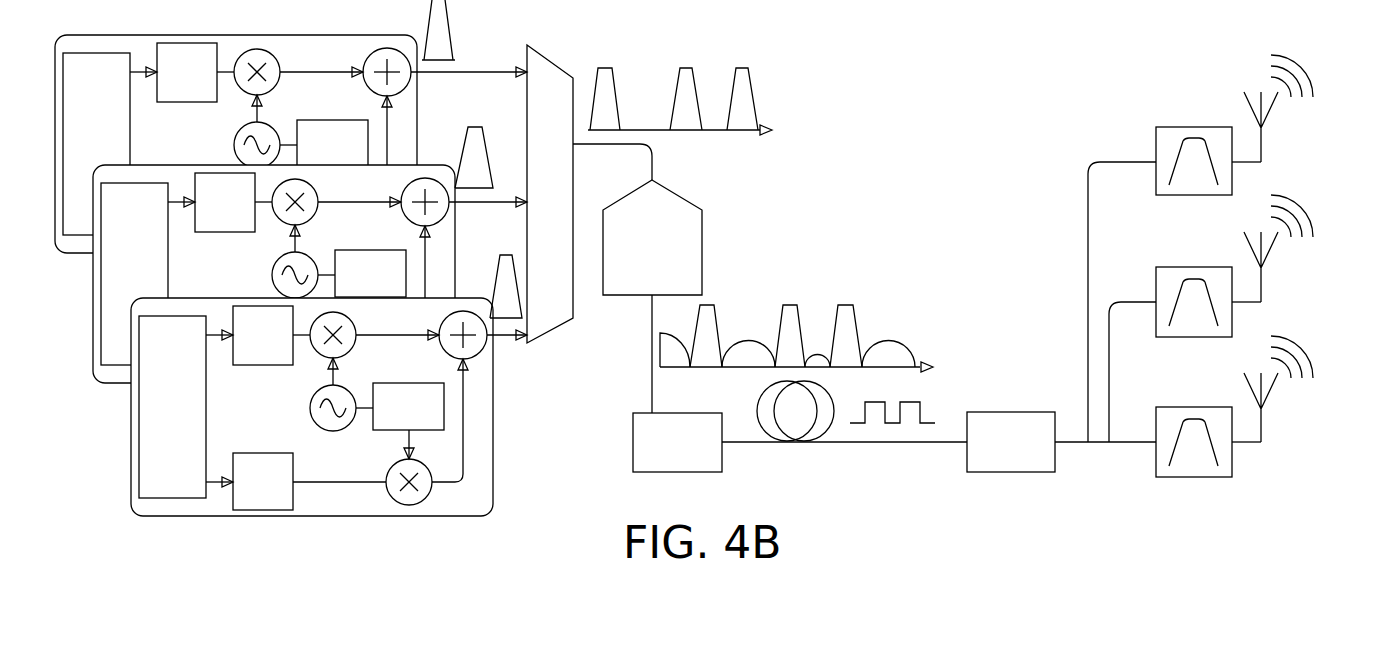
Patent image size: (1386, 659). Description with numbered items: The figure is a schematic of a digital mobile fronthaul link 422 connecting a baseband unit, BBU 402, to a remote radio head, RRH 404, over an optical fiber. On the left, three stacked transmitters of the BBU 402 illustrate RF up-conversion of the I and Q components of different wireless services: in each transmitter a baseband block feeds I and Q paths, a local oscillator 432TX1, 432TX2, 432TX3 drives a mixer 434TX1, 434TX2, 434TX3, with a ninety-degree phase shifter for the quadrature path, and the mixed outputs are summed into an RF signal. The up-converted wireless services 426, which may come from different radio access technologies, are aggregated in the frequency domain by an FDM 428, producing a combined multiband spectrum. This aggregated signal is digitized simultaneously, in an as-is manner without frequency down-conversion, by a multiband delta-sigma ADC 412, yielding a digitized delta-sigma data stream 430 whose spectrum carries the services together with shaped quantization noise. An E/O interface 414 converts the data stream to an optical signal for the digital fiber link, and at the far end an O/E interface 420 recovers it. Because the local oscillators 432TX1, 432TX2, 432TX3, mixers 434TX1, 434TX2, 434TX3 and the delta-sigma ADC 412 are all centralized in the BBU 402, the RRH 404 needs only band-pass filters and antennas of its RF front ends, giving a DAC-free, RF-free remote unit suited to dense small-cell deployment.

The BBU 402 is at (350, 540).
The RRH 404 is at (1199, 510).
The delta-sigma ADC 412 is at (703, 240).
The E/O interface 414 is at (678, 472).
The O/E interface 420 is at (1000, 473).
The digital MFH link 422 is at (946, 119).
The wireless services 426 is at (712, 53).
The FDM 428 is at (546, 56).
The digitized delta-sigma data stream 430 is at (886, 292).
The local oscillator 432TX1 is at (348, 392).
The local oscillator 432TX2 is at (310, 258).
The local oscillator 432TX3 is at (272, 128).
The mixer 434TX1 is at (352, 322).
The mixer 434TX2 is at (314, 189).
The mixer 434TX3 is at (276, 59).